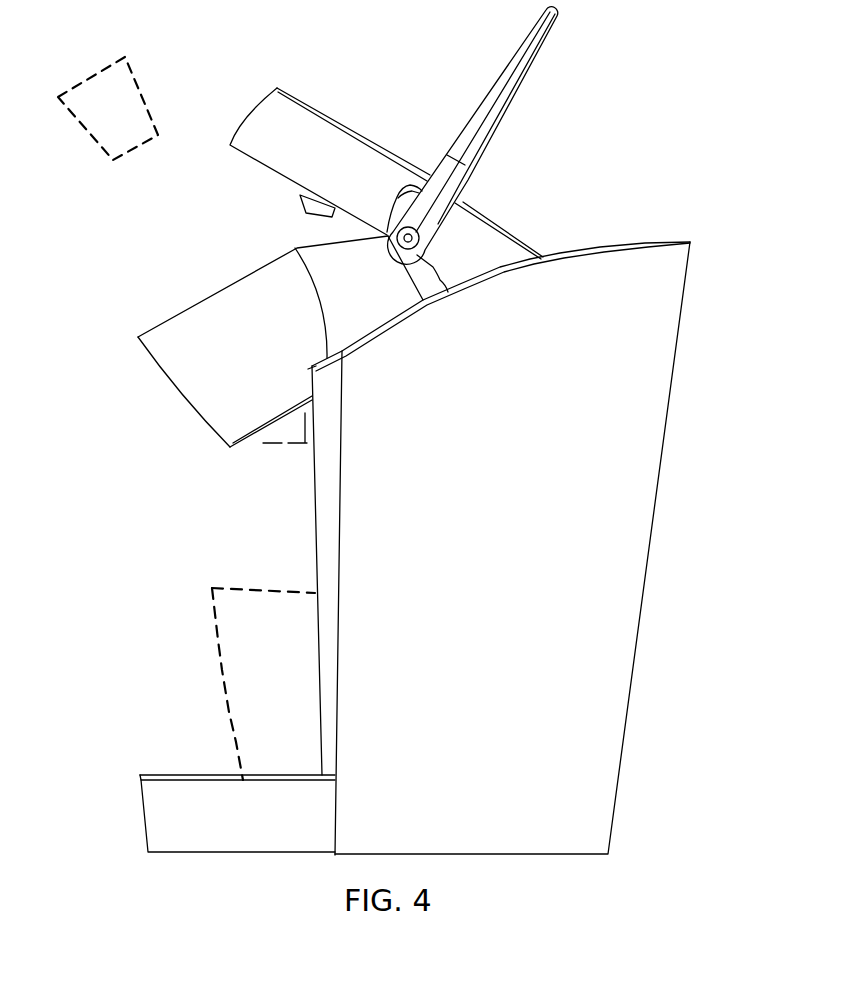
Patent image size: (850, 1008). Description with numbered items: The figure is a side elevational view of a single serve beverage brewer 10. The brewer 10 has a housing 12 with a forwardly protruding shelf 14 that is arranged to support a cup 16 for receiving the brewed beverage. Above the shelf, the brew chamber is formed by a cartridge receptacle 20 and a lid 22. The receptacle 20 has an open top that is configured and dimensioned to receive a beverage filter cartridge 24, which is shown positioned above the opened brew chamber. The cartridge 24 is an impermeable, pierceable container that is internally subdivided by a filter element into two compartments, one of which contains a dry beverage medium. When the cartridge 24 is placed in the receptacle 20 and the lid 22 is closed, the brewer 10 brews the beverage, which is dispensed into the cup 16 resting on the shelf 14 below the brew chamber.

The single serve beverage brewer 10 is at (725, 250).
The housing 12 is at (655, 452).
The forwardly protruding shelf 14 is at (159, 775).
The cup 16 is at (216, 643).
The cartridge receptacle 20 is at (180, 367).
The lid 22 is at (312, 128).
The beverage filter cartridge 24 is at (150, 88).